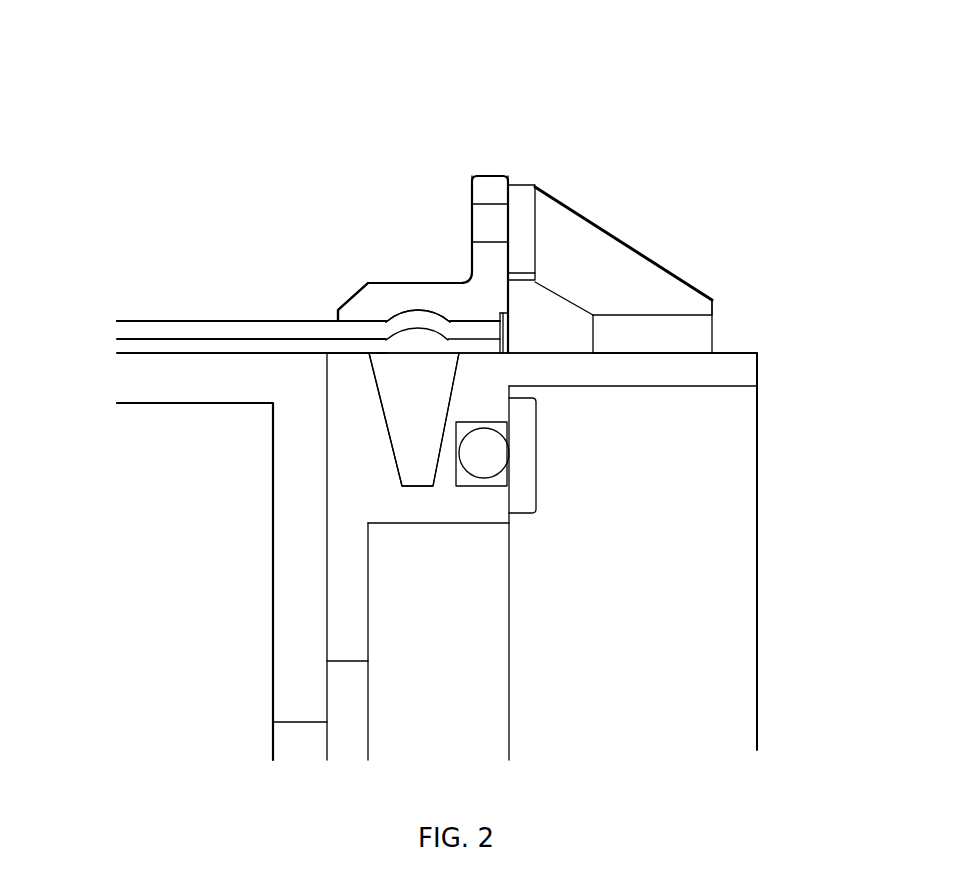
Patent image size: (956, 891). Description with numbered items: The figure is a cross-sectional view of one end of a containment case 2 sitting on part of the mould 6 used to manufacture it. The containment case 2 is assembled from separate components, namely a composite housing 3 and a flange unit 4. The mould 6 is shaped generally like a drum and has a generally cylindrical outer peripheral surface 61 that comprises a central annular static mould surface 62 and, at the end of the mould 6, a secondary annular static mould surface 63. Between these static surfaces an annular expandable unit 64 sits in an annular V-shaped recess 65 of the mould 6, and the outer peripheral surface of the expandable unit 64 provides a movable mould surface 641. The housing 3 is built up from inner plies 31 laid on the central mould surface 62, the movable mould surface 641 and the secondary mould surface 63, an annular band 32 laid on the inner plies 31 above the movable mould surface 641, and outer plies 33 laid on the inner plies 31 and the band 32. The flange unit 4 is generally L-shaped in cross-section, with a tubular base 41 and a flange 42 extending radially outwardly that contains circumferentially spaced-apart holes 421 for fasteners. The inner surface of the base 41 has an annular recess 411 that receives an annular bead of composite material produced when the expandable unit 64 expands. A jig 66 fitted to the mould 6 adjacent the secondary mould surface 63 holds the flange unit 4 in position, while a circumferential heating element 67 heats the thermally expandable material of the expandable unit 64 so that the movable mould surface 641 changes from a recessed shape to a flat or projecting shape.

The containment case 2 is at (263, 114).
The housing 3 is at (149, 320).
The inner plies 31 is at (252, 347).
The annular band 32 is at (415, 333).
The outer plies 33 is at (207, 328).
The flange unit 4 is at (485, 176).
The base 41 is at (357, 305).
The annular recess 411 is at (430, 328).
The flange 42 is at (497, 187).
The holes 421 is at (495, 212).
The mould 6 is at (290, 590).
The outer peripheral surface 61 is at (742, 350).
The central mould surface 62 is at (202, 352).
The secondary mould surface 63 is at (483, 353).
The expandable unit 64 is at (422, 468).
The movable mould surface 641 is at (397, 352).
The V-shaped recess 65 is at (397, 450).
The jig 66 is at (657, 277).
The heating element 67 is at (488, 457).